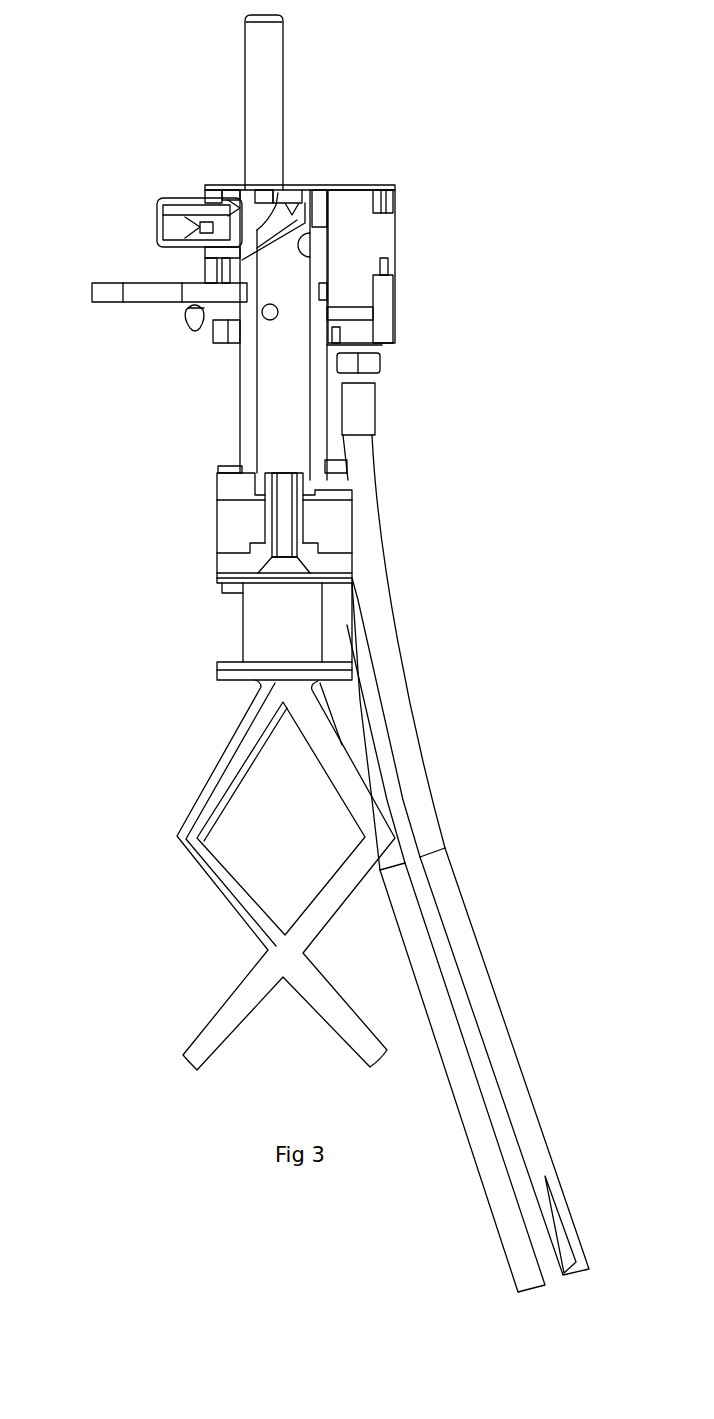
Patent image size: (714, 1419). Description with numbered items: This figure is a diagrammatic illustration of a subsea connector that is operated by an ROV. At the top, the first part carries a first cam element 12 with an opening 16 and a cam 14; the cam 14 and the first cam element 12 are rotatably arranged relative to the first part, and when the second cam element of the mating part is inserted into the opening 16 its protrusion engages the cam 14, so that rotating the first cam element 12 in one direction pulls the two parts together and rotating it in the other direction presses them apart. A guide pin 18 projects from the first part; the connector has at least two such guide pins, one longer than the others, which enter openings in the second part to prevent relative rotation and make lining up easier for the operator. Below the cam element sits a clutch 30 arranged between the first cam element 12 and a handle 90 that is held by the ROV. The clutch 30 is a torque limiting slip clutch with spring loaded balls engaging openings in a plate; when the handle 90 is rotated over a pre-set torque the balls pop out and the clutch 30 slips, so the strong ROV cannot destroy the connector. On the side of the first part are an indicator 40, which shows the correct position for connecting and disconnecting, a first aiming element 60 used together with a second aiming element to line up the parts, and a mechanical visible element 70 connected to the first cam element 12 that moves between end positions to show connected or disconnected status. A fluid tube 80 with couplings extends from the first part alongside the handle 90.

The first cam element 12 is at (317, 420).
The cam 14 is at (257, 228).
The opening 16 is at (308, 190).
The guide pin 18 is at (267, 43).
The clutch 30 is at (328, 550).
The indicator 40 is at (167, 205).
The first aiming element 60 is at (142, 288).
The mechanical visible element 70 is at (190, 315).
The fluid tube 80 is at (398, 733).
The handle 90 is at (252, 733).